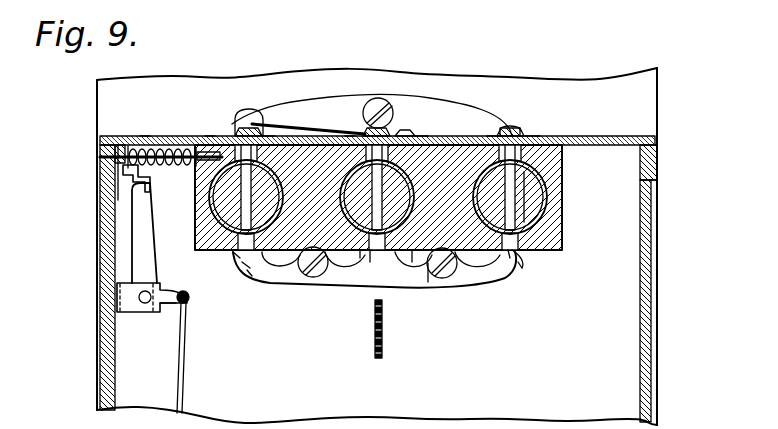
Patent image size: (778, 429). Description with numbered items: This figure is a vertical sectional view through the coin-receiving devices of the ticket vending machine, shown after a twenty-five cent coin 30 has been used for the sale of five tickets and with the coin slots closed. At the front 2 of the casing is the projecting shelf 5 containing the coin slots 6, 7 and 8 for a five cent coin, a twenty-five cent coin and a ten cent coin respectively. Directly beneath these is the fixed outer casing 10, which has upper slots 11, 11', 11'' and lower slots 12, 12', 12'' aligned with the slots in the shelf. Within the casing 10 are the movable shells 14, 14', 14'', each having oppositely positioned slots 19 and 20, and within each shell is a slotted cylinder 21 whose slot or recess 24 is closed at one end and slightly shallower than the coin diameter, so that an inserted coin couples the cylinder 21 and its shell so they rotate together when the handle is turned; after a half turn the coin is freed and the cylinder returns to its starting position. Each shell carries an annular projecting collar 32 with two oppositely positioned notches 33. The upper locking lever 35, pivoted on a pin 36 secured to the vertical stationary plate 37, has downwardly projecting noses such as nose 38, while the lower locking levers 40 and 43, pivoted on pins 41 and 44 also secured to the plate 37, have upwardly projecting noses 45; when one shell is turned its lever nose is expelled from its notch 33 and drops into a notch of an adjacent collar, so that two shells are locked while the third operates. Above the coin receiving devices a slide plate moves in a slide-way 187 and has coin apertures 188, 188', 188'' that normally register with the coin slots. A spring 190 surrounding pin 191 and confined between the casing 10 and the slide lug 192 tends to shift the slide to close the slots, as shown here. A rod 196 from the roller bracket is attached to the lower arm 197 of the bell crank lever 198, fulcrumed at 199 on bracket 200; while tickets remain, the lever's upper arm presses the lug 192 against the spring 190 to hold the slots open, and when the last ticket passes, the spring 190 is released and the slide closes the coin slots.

The front 2 is at (647, 290).
The projecting shelf 5 is at (645, 143).
The coin slot 6 is at (237, 127).
The coin slot 7 is at (408, 136).
The coin slot 8 is at (522, 135).
The outer casing 10 is at (412, 262).
The upper slot 11 is at (282, 93).
The upper slot 11' is at (442, 113).
The upper slot 11'' is at (555, 121).
The lower slot 12 is at (363, 211).
The lower slot 12' is at (353, 283).
The lower slot 12'' is at (541, 266).
The movable shell 14 is at (351, 197).
The movable shell 14' is at (339, 293).
The movable shell 14'' is at (552, 203).
The slot 19 is at (537, 150).
The slot 20 is at (232, 252).
The slotted cylinder 21 is at (533, 202).
The slot or recess 24 is at (535, 210).
The coin 30 is at (382, 332).
The annular projecting collar 32 is at (535, 200).
The notch 33 is at (243, 263).
The upper locking lever 35 is at (318, 103).
The pin 36 is at (384, 105).
The vertical stationary plate 37 is at (455, 80).
The nose 38 is at (250, 122).
The lower locking lever 40 is at (285, 280).
The pin 41 is at (313, 277).
The lower locking lever 43 is at (428, 282).
The pin 44 is at (448, 278).
The nose 45 is at (247, 270).
The slide-way 187 is at (575, 139).
The coin aperture 188 is at (199, 117).
The coin aperture 188' is at (357, 94).
The coin aperture 188'' is at (507, 110).
The spring 190 is at (145, 136).
The pin 191 is at (110, 156).
The slide lug 192 is at (125, 167).
The rod 196 is at (182, 389).
The lower arm 197 is at (175, 310).
The bell crank lever 198 is at (138, 257).
The fulcrum 199 is at (140, 299).
The bracket 200 is at (140, 308).